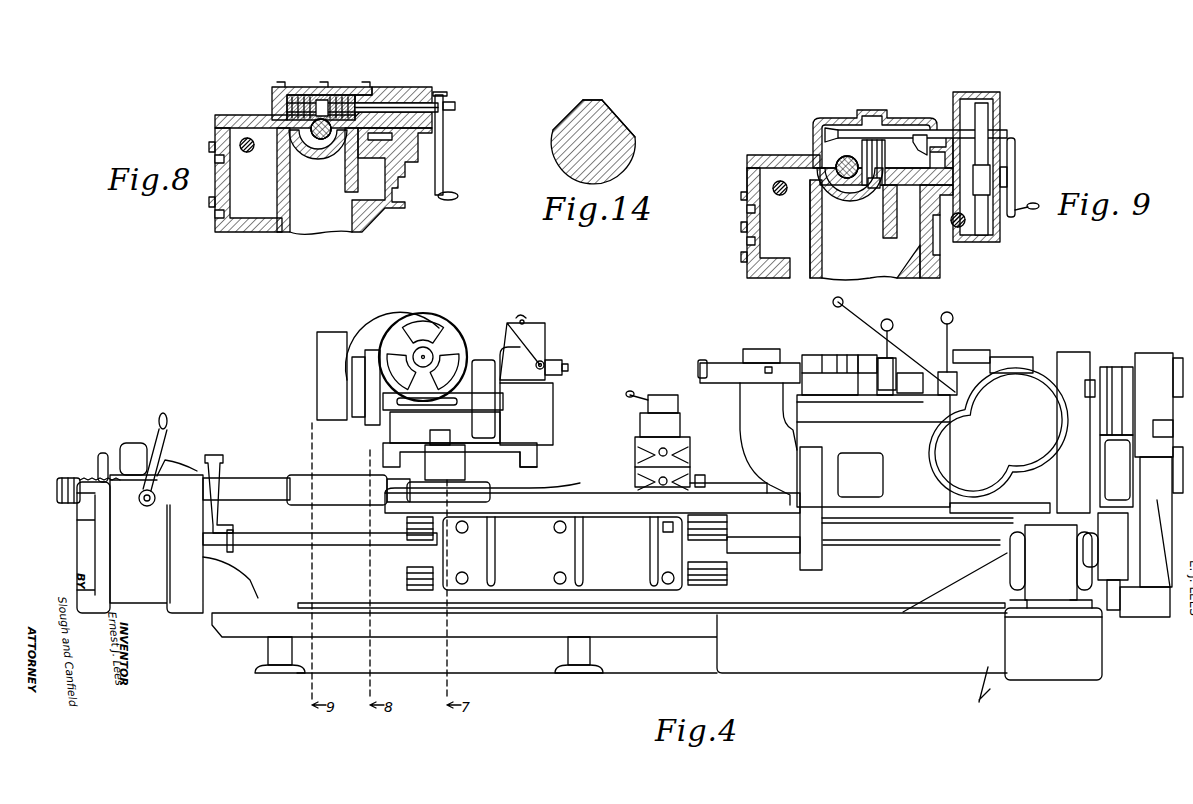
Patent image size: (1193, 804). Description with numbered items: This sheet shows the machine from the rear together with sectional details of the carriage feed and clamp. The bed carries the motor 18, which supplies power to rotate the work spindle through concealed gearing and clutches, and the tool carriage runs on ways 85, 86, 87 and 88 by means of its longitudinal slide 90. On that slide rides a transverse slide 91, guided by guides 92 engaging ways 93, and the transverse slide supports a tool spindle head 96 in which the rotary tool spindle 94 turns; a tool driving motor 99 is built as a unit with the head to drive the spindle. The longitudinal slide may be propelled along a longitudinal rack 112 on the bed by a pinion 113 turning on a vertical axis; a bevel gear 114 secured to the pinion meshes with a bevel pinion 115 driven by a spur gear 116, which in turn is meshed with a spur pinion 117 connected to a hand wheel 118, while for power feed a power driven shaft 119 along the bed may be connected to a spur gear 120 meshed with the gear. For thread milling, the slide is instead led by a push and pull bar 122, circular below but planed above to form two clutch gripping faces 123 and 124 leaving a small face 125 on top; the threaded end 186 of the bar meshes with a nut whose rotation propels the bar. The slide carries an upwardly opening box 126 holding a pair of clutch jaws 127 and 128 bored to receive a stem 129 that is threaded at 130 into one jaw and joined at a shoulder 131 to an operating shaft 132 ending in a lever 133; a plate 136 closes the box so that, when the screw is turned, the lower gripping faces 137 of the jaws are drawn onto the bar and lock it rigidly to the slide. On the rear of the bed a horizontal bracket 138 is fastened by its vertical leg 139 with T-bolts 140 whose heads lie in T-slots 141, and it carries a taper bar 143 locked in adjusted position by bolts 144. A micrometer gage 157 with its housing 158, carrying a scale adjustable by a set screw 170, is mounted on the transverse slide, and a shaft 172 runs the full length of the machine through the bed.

In FIG. 4, the motor 18 is at (1053, 602).
In FIG. 9, the way 85 is at (951, 222).
In FIG. 9, the way 86 is at (900, 155).
In FIG. 9, the way 87 is at (810, 200).
In FIG. 9, the way 88 is at (745, 178).
In FIG. 8, the longitudinal slide 90 is at (237, 117).
In FIG. 9, the longitudinal slide 90 is at (782, 155).
In FIG. 4, the longitudinal slide 90 is at (537, 489).
In FIG. 4, the transverse slide 91 is at (540, 453).
In FIG. 4, the guides 92 is at (537, 464).
In FIG. 4, the ways 93 is at (520, 463).
In FIG. 4, the rotary tool spindle 94 is at (547, 403).
In FIG. 4, the tool spindle head 96 is at (527, 440).
In FIG. 4, the tool driving motor 99 is at (432, 313).
In FIG. 9, the longitudinal rack 112 is at (898, 200).
In FIG. 9, the pinion 113 is at (863, 188).
In FIG. 9, the bevel gear 114 is at (837, 130).
In FIG. 9, the bevel pinion 115 is at (920, 135).
In FIG. 9, the spur gear 116 is at (985, 117).
In FIG. 9, the spur pinion 117 is at (990, 178).
In FIG. 9, the hand wheel 118 is at (1015, 157).
In FIG. 9, the power driven shaft 119 is at (958, 228).
In FIG. 9, the spur gear 120 is at (983, 237).
In FIG. 8, the push and pull bar 122 is at (325, 142).
In FIG. 14, the push and pull bar 122 is at (633, 137).
In FIG. 9, the push and pull bar 122 is at (845, 180).
In FIG. 8, the clutch gripping face 123 is at (345, 103).
In FIG. 14, the clutch gripping face 123 is at (620, 112).
In FIG. 8, the clutch gripping face 124 is at (313, 120).
In FIG. 14, the clutch gripping face 124 is at (570, 118).
In FIG. 14, the flat or circular face 125 is at (595, 100).
In FIG. 8, the box 126 is at (272, 105).
In FIG. 8, the clutch jaw 127 is at (298, 87).
In FIG. 8, the clutch jaw 128 is at (357, 97).
In FIG. 8, the stem 129 is at (332, 103).
In FIG. 8, the screw thread 130 is at (313, 107).
In FIG. 8, the shoulder 131 is at (380, 95).
In FIG. 8, the operating shaft 132 is at (395, 105).
In FIG. 8, the lever 133 is at (443, 135).
In FIG. 8, the plate 136 is at (357, 90).
In FIG. 8, the gripping faces 137 is at (310, 155).
In FIG. 9, the gripping faces 137 is at (850, 184).
In FIG. 4, the bracket 138 is at (595, 507).
In FIG. 4, the vertical leg 139 is at (600, 580).
In FIG. 4, the T-bolts 140 is at (672, 582).
In FIG. 4, the T-slots 141 is at (713, 577).
In FIG. 4, the taper bar 143 is at (689, 506).
In FIG. 4, the bolts 144 is at (410, 526).
In FIG. 4, the micrometer gage 157 is at (545, 333).
In FIG. 4, the gage housing 158 is at (507, 347).
In FIG. 4, the set screw 170 is at (527, 312).
In FIG. 8, the shaft 172 is at (248, 152).
In FIG. 9, the shaft 172 is at (780, 196).
In FIG. 4, the thread 186 is at (80, 478).